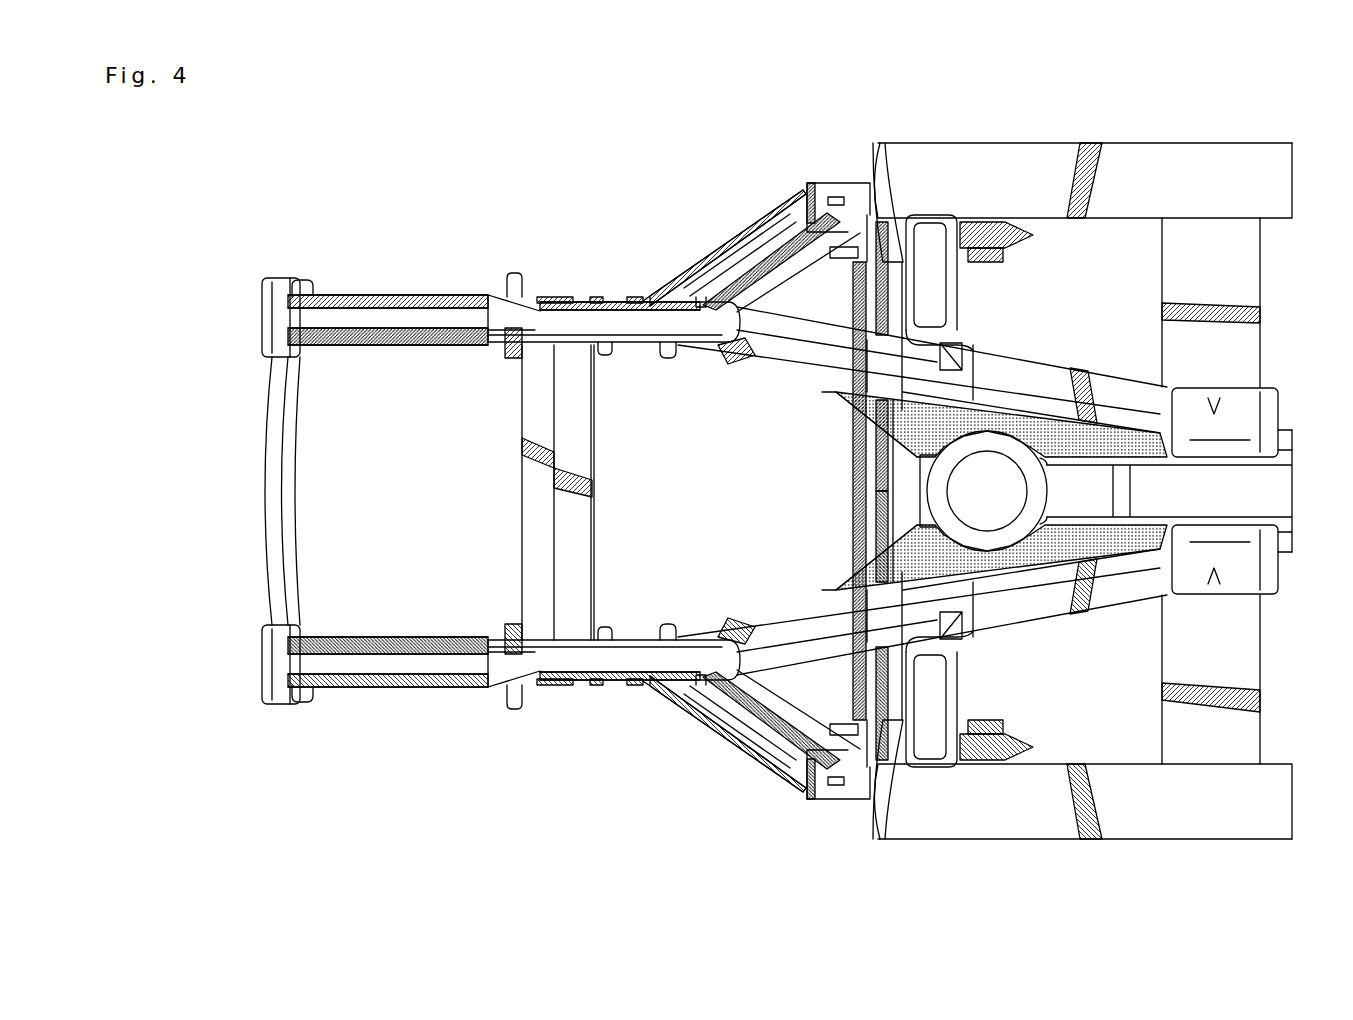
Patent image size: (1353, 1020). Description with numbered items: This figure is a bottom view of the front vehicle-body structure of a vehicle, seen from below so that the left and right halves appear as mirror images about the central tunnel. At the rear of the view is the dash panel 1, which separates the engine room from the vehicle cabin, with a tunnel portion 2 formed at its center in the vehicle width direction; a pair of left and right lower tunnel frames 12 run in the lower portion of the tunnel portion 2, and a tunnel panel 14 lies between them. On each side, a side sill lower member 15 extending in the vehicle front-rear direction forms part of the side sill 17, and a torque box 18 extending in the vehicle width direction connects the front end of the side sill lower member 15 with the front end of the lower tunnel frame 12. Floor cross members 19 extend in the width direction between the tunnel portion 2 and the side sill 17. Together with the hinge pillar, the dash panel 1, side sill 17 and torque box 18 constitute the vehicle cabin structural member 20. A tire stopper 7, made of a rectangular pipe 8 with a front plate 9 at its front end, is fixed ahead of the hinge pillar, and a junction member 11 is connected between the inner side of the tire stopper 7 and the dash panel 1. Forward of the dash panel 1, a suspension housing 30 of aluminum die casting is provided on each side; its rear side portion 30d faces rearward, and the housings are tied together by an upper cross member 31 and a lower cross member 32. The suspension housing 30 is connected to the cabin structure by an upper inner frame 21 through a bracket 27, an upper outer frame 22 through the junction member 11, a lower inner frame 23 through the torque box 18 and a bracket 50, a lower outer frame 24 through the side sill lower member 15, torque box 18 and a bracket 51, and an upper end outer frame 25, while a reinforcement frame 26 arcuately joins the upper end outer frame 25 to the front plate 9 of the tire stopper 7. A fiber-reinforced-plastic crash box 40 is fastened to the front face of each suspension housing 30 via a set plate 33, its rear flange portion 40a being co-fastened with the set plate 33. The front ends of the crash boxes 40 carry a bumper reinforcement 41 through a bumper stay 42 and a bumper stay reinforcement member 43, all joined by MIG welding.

The dash panel 1 is at (838, 670).
The tunnel portion 2 is at (866, 570).
The tire stopper 7 is at (826, 806).
The rectangular pipe 8 is at (815, 800).
The front plate 9 is at (804, 788).
The junction member 11 is at (840, 690).
The lower tunnel frame 12 is at (1092, 612).
The tunnel panel 14 is at (1106, 491).
The side sill lower member 15 is at (1083, 491).
The side sill 17 is at (1095, 838).
The torque box 18 is at (969, 491).
The floor cross member 19 is at (1250, 634).
The vehicle cabin structural member 20 is at (825, 669).
The upper inner frame 21 is at (806, 615).
The upper outer frame 22 is at (740, 715).
The lower inner frame 23 is at (767, 638).
The lower outer frame 24 is at (760, 700).
The upper end outer frame 25 is at (685, 695).
The reinforcement frame 26 is at (772, 745).
The bracket 27 is at (837, 569).
The suspension housing 30 is at (572, 692).
The rear side portion 30d is at (625, 636).
The upper cross member 31 is at (592, 515).
The lower cross member 32 is at (535, 502).
The set plate 33 is at (520, 695).
The crash box 40 is at (378, 640).
The flange portion 40a is at (508, 635).
The bumper reinforcement 41 is at (300, 468).
The bumper stay 42 is at (262, 675).
The bumper stay reinforcement member 43 is at (300, 698).
The bracket 50 is at (940, 657).
The bracket 51 is at (893, 795).